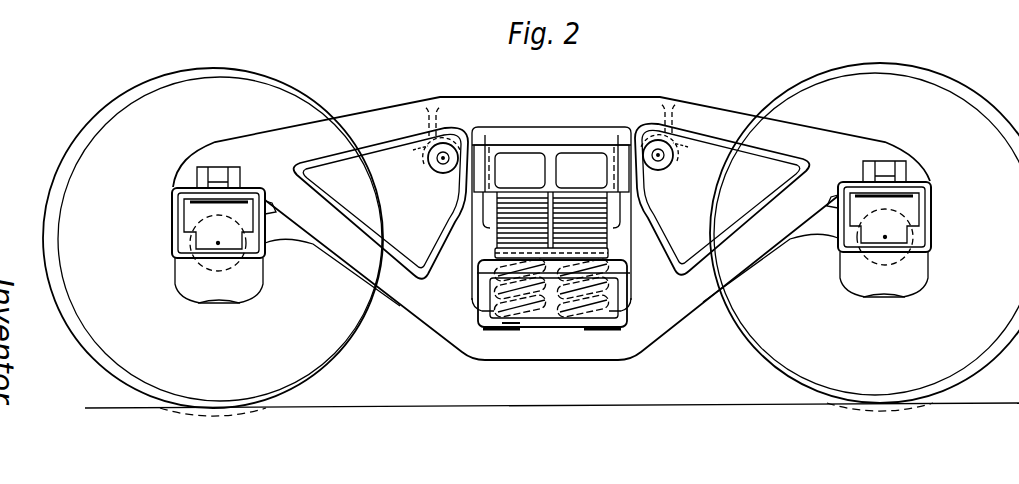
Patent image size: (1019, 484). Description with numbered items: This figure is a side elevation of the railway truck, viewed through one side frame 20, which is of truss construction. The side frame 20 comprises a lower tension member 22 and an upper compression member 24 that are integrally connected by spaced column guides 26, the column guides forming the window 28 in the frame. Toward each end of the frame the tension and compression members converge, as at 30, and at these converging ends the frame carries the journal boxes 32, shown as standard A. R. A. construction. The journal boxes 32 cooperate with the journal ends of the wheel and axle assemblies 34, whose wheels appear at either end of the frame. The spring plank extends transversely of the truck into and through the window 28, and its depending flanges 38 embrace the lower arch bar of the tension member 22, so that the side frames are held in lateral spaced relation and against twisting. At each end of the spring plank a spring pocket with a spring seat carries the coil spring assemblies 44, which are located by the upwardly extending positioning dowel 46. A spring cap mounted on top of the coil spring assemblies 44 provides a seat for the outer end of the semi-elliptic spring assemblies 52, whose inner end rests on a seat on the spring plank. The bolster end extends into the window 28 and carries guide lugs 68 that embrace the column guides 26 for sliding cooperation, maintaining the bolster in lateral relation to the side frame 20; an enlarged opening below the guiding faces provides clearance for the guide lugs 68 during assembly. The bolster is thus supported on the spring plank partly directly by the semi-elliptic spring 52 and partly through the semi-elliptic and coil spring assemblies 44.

The side frame 20 is at (645, 97).
The tension member 22 is at (607, 350).
The compression member 24 is at (386, 114).
The column guides 26 is at (642, 223).
The window 28 is at (568, 231).
The converging end portions 30 is at (832, 135).
The journal boxes 32 is at (172, 236).
The wheel and axle assemblies 34 is at (130, 102).
The depending flanges 38 is at (558, 323).
The coil spring assemblies 44 is at (502, 325).
The positioning dowel 46 is at (610, 252).
The semi-elliptic spring assemblies 52 is at (537, 220).
The guide lugs 68 is at (480, 187).